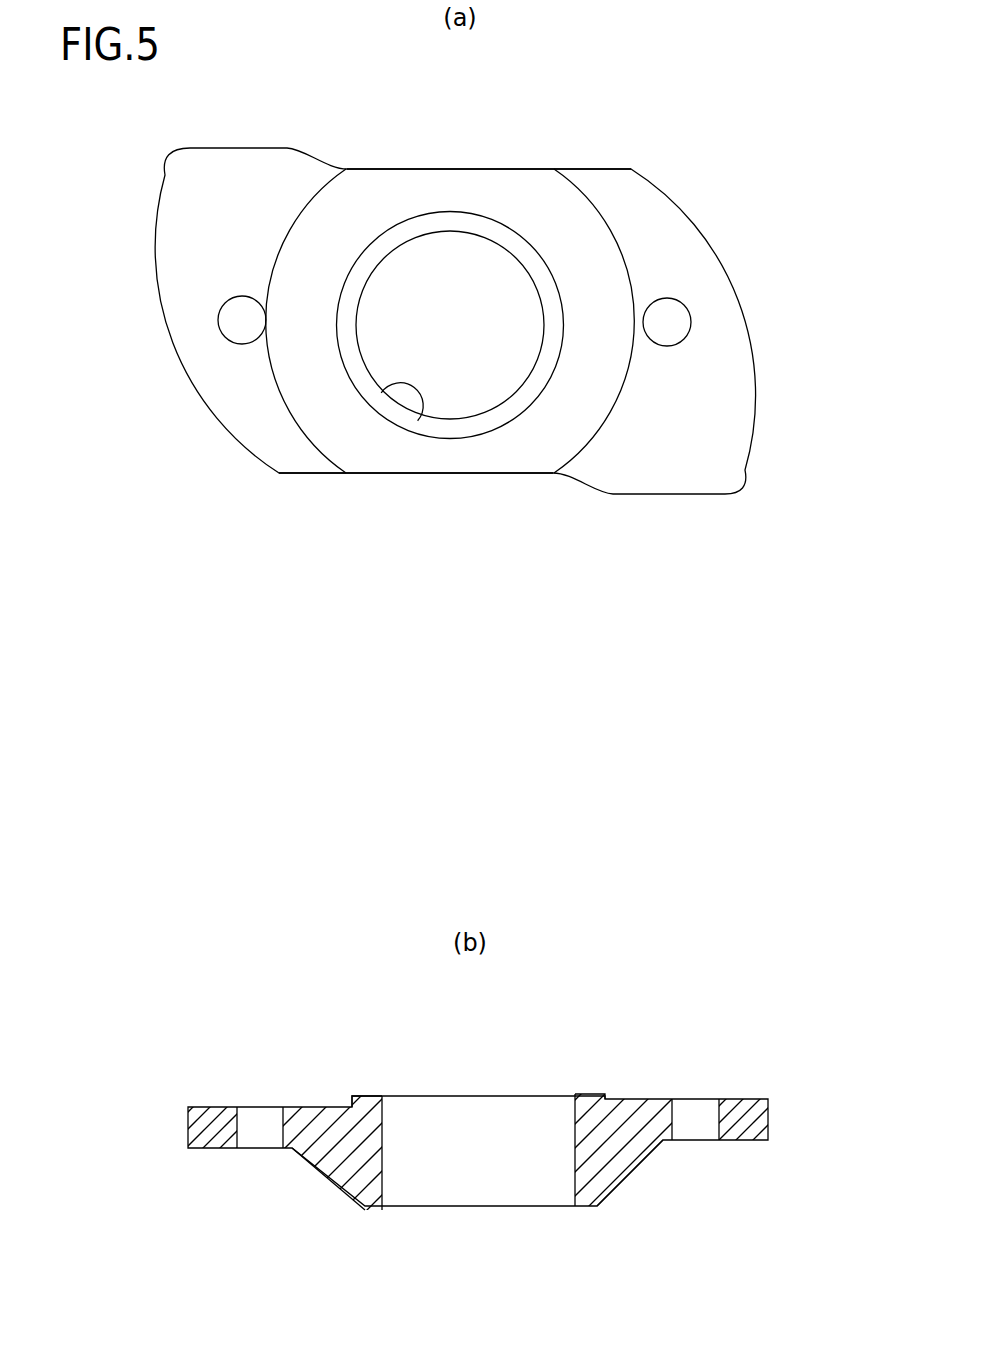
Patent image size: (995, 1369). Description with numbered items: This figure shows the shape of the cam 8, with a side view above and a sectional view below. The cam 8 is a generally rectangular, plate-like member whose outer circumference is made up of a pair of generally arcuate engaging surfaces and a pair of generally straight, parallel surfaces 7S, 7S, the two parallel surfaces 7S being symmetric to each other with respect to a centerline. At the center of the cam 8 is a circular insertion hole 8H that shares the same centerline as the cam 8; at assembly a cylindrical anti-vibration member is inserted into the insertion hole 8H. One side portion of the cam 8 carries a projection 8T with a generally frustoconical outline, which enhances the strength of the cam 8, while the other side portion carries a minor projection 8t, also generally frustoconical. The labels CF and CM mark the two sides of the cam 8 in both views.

The cam 8 is at (692, 185).
The parallel surfaces 7S is at (409, 169).
The insertion hole 8H is at (419, 419).
The projection 8T is at (545, 455).
The minor projection 8t is at (362, 1095).
The front face side CF is at (162, 321).
The rear face side CM is at (755, 372).